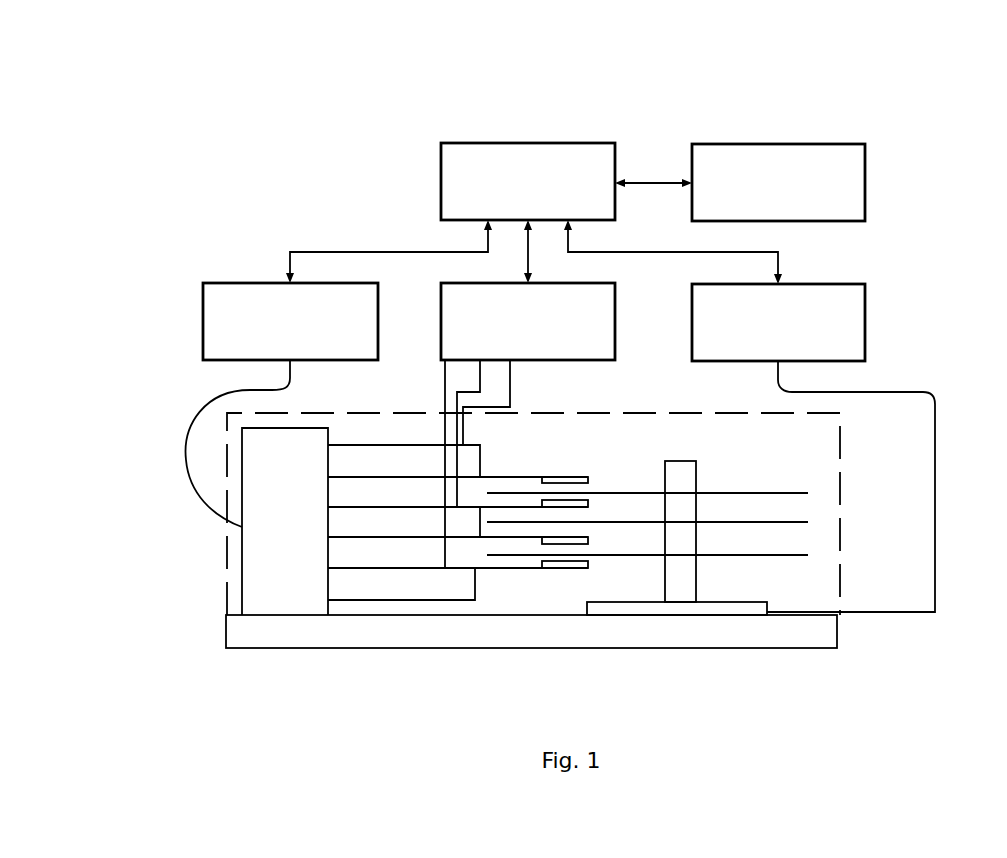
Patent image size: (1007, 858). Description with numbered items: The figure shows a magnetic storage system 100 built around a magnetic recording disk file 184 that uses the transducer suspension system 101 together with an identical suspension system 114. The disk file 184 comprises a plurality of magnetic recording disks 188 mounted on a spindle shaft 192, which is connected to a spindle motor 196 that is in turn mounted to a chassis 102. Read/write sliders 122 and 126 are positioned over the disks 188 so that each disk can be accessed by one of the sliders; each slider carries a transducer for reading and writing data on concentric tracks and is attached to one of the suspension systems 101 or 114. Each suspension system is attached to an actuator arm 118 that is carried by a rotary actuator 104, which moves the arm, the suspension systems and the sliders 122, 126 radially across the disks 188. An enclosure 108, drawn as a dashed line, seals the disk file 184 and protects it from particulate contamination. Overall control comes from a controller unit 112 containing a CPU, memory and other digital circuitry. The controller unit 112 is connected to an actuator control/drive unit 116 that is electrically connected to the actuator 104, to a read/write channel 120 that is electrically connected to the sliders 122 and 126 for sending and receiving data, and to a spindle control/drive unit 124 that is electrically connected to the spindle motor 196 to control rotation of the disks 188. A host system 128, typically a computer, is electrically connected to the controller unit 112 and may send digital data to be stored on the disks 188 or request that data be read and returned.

The magnetic storage system 100 is at (154, 131).
The transducer suspension system 101 is at (478, 505).
The chassis 102 is at (828, 635).
The rotary actuator 104 is at (244, 527).
The enclosure 108 is at (501, 514).
The controller unit 112 is at (501, 181).
The suspension system 114 is at (505, 473).
The actuator control/drive unit 116 is at (263, 321).
The actuator arm 118 is at (338, 456).
The read/write channel 120 is at (556, 321).
The read/write slider 122 is at (588, 502).
The spindle control/drive unit 124 is at (807, 321).
The read/write slider 126 is at (588, 480).
The host system 128 is at (807, 182).
The magnetic recording disk file 184 is at (338, 661).
The magnetic recording disks 188 is at (797, 555).
The spindle shaft 192 is at (698, 472).
The spindle motor 196 is at (617, 610).